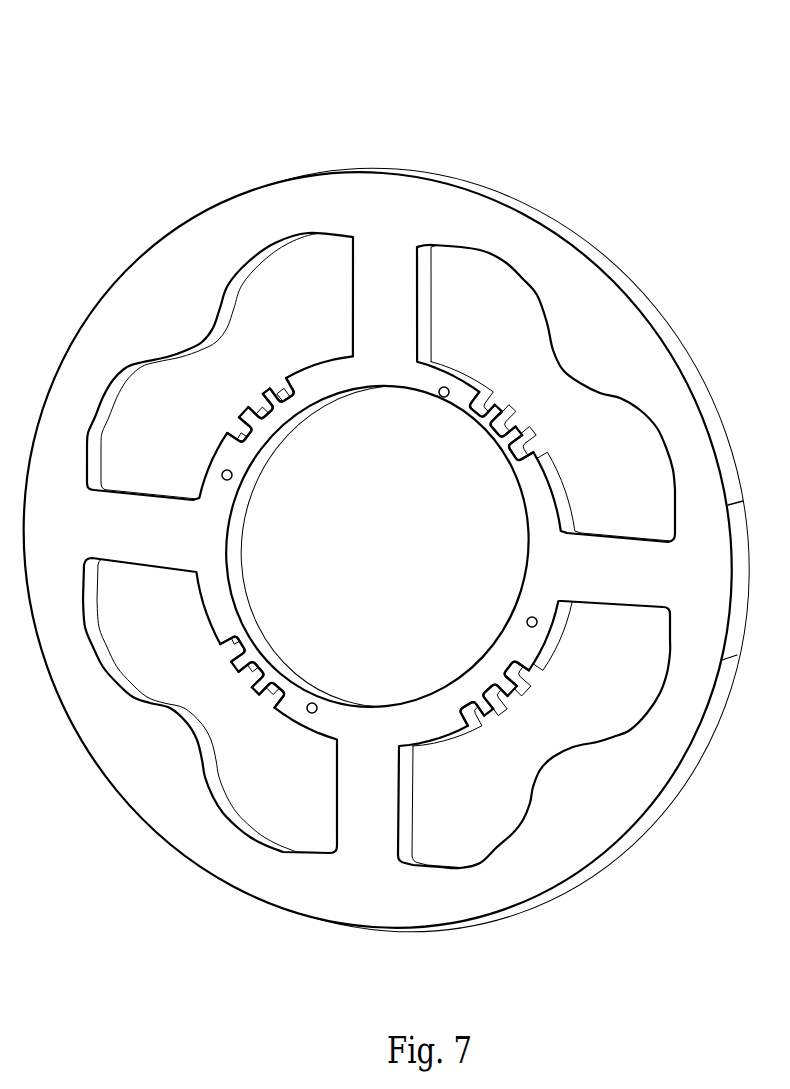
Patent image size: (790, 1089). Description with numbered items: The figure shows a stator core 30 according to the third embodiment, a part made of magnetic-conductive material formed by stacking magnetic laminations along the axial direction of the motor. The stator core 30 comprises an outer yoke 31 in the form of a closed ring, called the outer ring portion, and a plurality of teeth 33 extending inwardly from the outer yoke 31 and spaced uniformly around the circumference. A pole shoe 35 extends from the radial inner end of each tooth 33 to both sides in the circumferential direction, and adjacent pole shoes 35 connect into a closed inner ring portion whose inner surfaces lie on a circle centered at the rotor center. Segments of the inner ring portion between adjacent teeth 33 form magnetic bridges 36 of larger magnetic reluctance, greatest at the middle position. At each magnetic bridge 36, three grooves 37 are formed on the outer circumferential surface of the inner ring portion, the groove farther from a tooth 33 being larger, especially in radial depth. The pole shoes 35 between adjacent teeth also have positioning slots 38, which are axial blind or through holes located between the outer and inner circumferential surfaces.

The stator core 30 is at (395, 532).
The outer yoke 31 is at (323, 218).
The teeth 33 is at (385, 258).
The pole shoe 35 is at (462, 383).
The magnetic bridge 36 is at (280, 435).
The grooves 37 is at (500, 403).
The positioning slots 38 is at (232, 477).